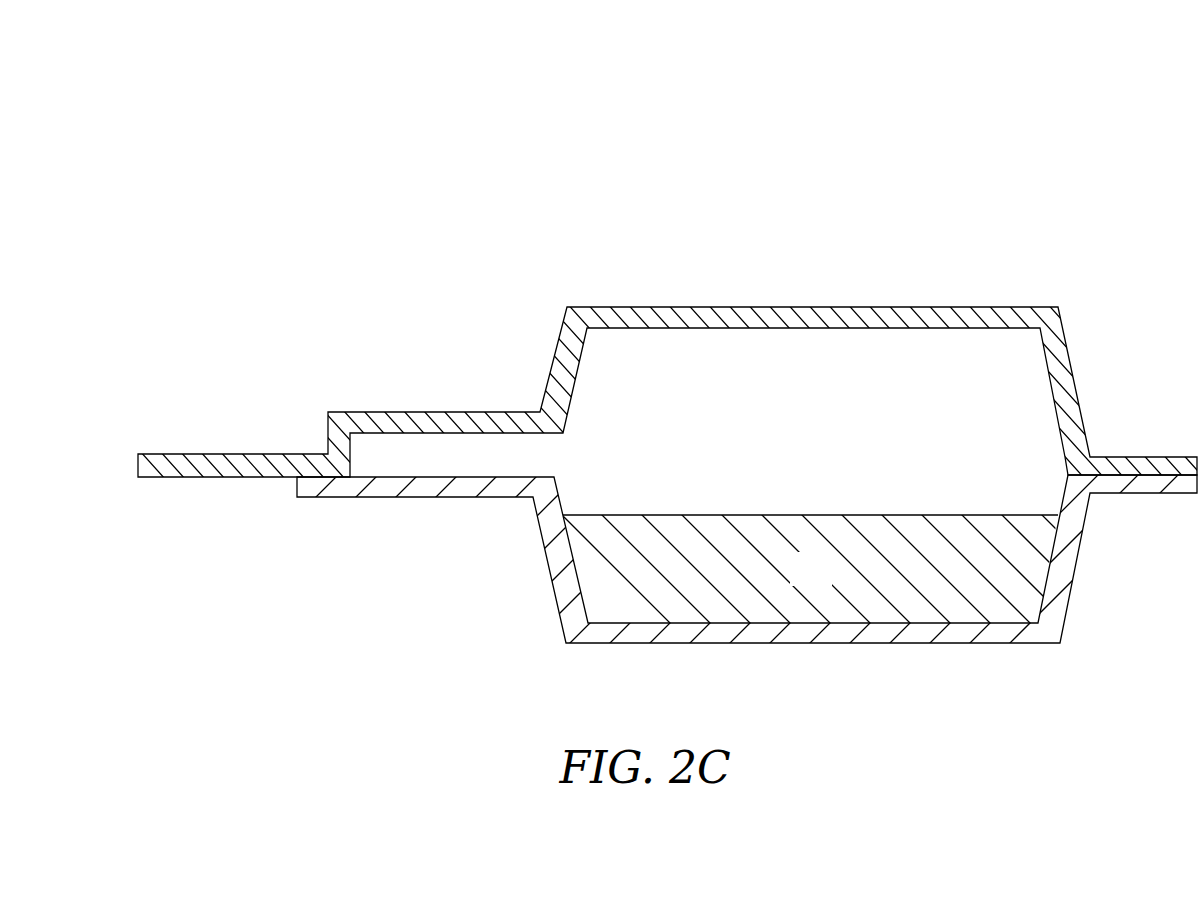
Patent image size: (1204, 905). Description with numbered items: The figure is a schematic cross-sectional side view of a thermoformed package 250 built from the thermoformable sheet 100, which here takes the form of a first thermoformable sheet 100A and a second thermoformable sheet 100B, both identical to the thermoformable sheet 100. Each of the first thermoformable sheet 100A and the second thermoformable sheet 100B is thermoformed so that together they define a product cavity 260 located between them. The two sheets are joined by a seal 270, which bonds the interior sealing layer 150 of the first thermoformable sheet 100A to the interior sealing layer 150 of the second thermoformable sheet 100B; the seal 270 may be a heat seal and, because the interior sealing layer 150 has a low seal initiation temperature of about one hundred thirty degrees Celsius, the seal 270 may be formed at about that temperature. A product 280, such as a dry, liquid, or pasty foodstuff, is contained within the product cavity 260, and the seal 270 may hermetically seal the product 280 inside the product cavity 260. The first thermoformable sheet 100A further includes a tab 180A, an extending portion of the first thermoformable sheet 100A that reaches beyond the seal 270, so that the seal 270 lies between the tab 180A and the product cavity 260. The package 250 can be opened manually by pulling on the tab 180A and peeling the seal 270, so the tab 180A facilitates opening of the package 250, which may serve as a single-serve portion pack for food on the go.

The thermoformed package 250 is at (1014, 212).
The thermoformable sheet 100 is at (458, 265).
The first thermoformable sheet 100A is at (560, 375).
The second thermoformable sheet 100B is at (552, 525).
The tab 180A is at (138, 437).
The interior sealing layer 150 is at (560, 500).
The product cavity 260 is at (724, 375).
The seal 270 is at (313, 468).
The product 280 is at (827, 582).